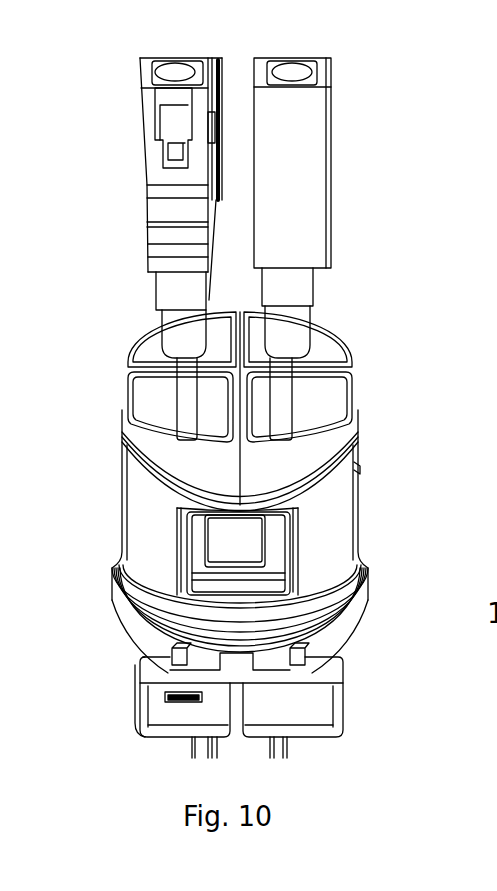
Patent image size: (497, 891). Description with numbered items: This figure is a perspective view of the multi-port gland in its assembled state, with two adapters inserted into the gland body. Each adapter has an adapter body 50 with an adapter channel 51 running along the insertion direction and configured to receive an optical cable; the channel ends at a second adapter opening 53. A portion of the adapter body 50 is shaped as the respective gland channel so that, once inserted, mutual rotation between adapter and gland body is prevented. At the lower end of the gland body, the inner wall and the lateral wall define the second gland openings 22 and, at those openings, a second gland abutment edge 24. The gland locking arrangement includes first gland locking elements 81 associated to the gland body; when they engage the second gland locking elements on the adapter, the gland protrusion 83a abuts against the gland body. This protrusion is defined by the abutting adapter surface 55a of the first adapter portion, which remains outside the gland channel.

The adapter channel 51 is at (150, 333).
The first gland locking elements 81 is at (364, 420).
The second gland openings 22 is at (299, 493).
The adapter body 50 is at (166, 451).
The second gland abutment edge 24 is at (176, 497).
The second adapter opening 53 is at (258, 427).
The gland protrusion 83a is at (133, 710).
The abutting adapter surface 55a is at (343, 697).